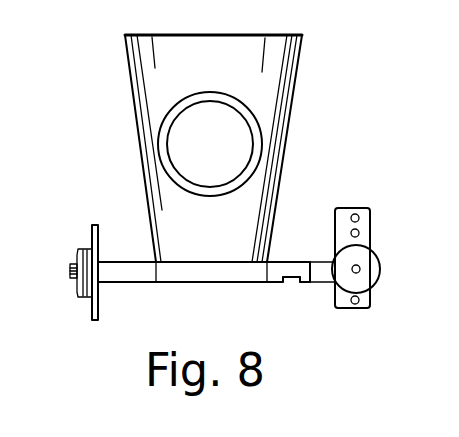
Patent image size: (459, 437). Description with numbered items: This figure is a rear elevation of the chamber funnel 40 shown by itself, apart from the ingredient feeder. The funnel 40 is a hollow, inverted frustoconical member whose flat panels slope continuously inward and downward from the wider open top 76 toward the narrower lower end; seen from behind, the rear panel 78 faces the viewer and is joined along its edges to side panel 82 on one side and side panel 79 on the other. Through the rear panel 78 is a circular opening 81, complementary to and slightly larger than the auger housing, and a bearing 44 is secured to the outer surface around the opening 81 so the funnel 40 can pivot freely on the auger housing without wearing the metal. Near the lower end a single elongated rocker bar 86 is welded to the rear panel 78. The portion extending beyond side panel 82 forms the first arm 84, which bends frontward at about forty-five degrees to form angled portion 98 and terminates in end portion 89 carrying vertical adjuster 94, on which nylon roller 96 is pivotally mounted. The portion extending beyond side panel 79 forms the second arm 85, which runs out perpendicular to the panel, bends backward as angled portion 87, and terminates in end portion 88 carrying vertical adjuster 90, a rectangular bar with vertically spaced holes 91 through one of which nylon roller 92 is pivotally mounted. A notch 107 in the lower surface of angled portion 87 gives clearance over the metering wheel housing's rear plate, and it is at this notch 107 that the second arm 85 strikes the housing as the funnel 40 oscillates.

The chamber funnel 40 is at (303, 50).
The open top 76 is at (175, 35).
The side panel 82 is at (128, 78).
The rear panel 78 is at (263, 103).
The side panel 79 is at (287, 126).
The bearing 44 is at (262, 150).
The opening 81 is at (228, 113).
The first arm 84 is at (125, 252).
The second arm 85 is at (292, 258).
The rocker bar 86 is at (205, 283).
The angled portion 87 is at (278, 286).
The end portion 88 is at (322, 262).
The end portion 89 is at (103, 284).
The vertical adjuster 90 is at (370, 212).
The holes 91 is at (360, 234).
The nylon roller 92 is at (380, 273).
The vertical adjuster 94 is at (90, 222).
The nylon roller 96 is at (78, 253).
The angled portion 98 is at (148, 262).
The notch 107 is at (290, 284).